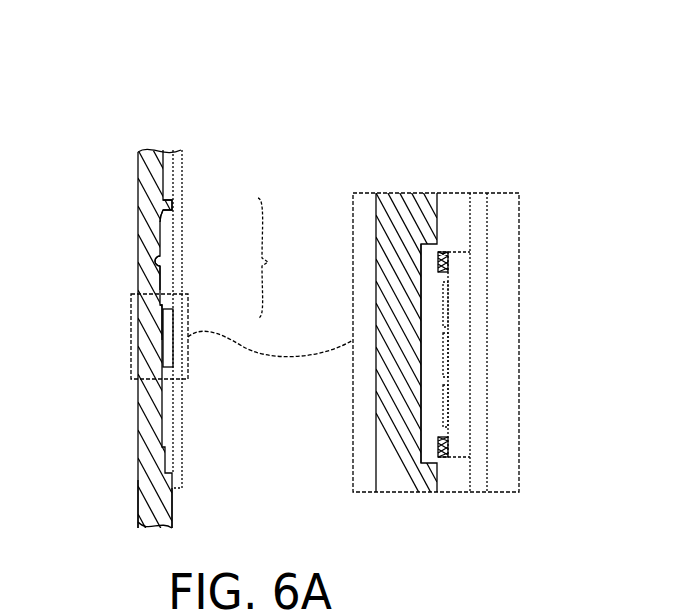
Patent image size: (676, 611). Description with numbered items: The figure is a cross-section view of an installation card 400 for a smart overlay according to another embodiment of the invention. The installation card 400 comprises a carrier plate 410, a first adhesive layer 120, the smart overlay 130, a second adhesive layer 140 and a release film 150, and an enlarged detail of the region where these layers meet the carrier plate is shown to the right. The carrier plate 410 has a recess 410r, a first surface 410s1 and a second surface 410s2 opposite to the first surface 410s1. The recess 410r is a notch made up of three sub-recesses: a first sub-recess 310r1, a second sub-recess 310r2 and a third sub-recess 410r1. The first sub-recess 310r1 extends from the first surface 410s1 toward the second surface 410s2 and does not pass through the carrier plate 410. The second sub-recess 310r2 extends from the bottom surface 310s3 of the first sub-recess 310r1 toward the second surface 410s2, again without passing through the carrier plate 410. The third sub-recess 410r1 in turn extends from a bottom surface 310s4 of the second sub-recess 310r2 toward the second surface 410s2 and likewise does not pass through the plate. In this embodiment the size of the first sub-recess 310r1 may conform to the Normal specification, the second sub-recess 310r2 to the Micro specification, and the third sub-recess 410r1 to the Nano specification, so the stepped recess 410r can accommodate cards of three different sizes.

The installation card 400 is at (131, 99).
The carrier plate 410 is at (145, 441).
The first adhesive layer 120 is at (178, 440).
The smart overlay 130 is at (168, 323).
The second adhesive layer 140 is at (446, 262).
The release film 150 is at (428, 261).
The bottom surface of the first sub-recess 310s3 is at (163, 222).
The first sub-recess 310r1 is at (172, 207).
The bottom surface of the second sub-recess 310s4 is at (158, 262).
The second sub-recess 310r2 is at (160, 280).
The recess 410r is at (432, 393).
The third sub-recess 410r1 is at (170, 320).
The first surface 410s1 is at (176, 507).
The second surface 410s2 is at (138, 501).